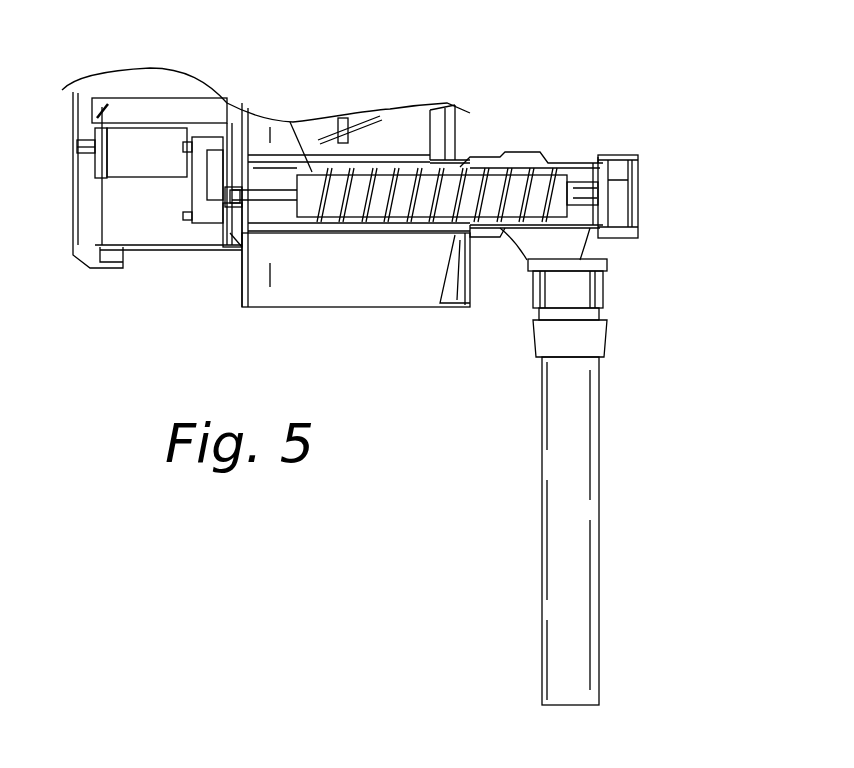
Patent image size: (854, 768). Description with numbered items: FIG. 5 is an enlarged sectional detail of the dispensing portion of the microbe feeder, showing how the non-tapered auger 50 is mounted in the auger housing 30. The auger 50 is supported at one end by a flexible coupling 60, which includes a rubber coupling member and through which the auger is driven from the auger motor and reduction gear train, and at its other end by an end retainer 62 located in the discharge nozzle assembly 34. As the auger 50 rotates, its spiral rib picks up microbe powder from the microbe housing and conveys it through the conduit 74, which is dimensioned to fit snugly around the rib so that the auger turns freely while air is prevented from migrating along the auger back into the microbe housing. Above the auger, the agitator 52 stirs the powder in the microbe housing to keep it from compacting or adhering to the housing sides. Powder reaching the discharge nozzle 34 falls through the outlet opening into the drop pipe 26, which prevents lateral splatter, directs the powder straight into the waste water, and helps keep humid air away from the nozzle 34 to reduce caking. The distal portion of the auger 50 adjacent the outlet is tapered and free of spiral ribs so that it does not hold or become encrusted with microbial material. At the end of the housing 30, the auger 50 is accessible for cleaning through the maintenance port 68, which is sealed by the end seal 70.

The drop pipe 26 is at (602, 473).
The auger housing 30 is at (390, 283).
The discharge nozzle 34 is at (618, 262).
The non-tapered auger 50 is at (370, 160).
The agitator 52 is at (320, 120).
The flexible coupling 60 is at (228, 250).
The end retainer 62 is at (593, 157).
The maintenance port 68 is at (623, 158).
The end seal 70 is at (645, 200).
The conduit 74 is at (442, 233).